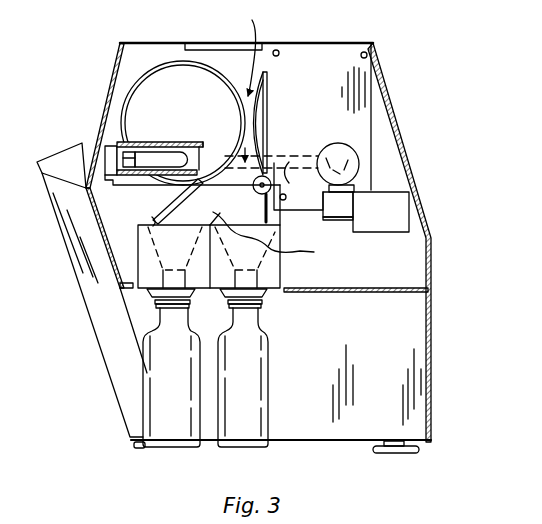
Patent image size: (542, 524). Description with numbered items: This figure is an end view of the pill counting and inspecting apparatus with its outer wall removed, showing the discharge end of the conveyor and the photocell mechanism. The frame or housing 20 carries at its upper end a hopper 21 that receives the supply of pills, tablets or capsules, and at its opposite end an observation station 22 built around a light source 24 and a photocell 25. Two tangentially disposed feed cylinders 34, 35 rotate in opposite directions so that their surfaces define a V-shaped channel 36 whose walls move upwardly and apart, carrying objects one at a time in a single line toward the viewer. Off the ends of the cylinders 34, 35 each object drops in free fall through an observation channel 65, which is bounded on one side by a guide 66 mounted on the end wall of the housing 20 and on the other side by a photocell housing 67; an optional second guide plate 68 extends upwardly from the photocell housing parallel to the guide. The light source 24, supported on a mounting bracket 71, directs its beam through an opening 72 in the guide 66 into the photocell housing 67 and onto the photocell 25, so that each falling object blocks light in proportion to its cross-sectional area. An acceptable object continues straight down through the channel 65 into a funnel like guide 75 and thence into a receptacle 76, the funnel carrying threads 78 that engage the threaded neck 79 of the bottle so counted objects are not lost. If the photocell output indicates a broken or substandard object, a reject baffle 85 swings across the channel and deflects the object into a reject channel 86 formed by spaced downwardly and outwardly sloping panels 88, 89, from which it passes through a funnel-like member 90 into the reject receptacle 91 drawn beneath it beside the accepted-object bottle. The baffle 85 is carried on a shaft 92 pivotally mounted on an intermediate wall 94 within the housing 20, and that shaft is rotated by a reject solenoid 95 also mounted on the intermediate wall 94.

The housing 20 is at (393, 88).
The hopper 21 is at (205, 52).
The observation station 22 is at (253, 170).
The light source 24 is at (338, 152).
The photocell 25 is at (172, 155).
The feed cylinder 34 is at (267, 106).
The feed cylinder 35 is at (137, 84).
The channel 36 is at (239, 52).
The observation channel 65 is at (243, 145).
The guide 66 is at (265, 88).
The photocell housing 67 is at (102, 157).
The second guide plate 68 is at (232, 90).
The mounting bracket 71 is at (365, 222).
The opening 72 is at (276, 150).
The funnel like guide 75 is at (262, 260).
The receptacle 76 is at (273, 356).
The threads 78 is at (268, 296).
The threaded neck 79 is at (263, 306).
The reject baffle 85 is at (265, 212).
The reject channel 86 is at (209, 241).
The sloping panel 88 is at (168, 202).
The sloping panel 89 is at (276, 238).
The funnel-like member 90 is at (152, 218).
The bottle 91 is at (160, 371).
The shaft 92 is at (270, 178).
The intermediate wall 94 is at (411, 332).
The reject solenoid 95 is at (281, 228).